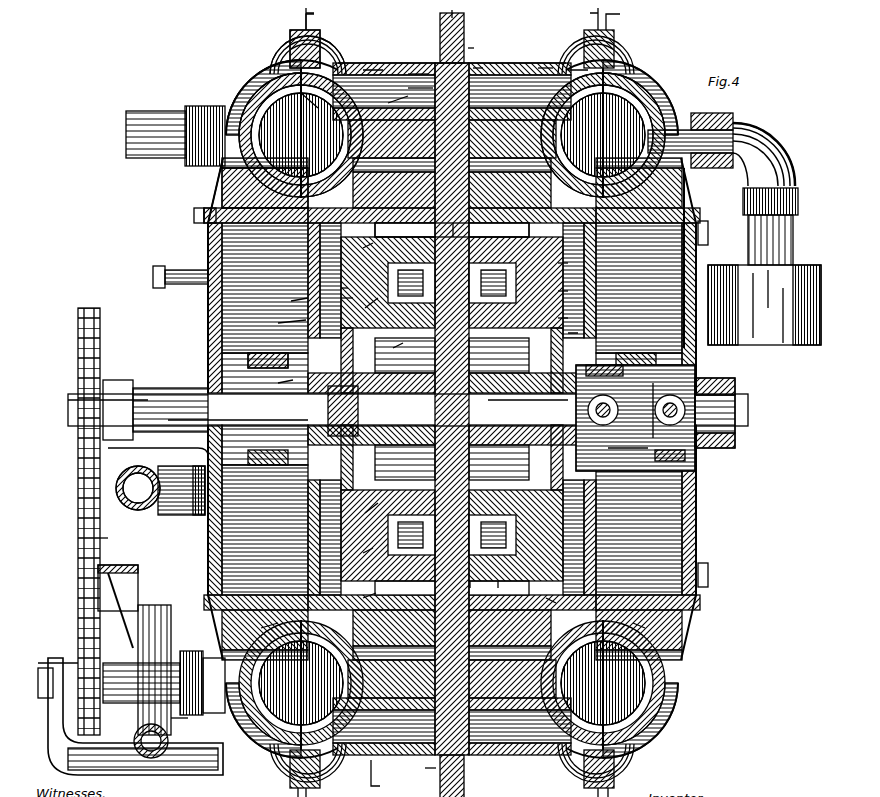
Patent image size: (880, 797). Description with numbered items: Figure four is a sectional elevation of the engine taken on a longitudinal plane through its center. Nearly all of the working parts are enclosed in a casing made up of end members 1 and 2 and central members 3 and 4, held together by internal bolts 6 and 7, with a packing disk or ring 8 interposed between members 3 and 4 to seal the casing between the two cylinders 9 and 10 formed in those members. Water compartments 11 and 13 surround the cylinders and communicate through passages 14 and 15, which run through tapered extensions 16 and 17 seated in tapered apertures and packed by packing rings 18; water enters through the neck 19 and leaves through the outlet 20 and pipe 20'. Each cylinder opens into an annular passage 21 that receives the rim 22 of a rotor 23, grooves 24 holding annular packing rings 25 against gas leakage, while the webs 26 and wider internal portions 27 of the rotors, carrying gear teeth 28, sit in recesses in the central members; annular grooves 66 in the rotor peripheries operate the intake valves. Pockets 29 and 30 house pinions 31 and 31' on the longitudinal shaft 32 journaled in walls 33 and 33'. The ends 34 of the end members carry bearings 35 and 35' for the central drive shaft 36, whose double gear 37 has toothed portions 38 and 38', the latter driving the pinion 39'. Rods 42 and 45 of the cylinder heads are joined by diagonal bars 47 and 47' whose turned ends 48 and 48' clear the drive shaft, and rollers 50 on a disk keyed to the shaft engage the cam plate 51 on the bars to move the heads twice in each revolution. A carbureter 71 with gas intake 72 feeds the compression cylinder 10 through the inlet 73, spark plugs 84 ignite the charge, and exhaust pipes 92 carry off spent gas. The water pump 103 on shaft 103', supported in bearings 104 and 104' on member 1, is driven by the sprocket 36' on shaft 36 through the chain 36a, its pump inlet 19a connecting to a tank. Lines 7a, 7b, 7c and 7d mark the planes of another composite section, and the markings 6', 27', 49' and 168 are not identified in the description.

The end member 1 is at (215, 172).
The end member 2 is at (680, 182).
The central member 3 is at (372, 58).
The central member 4 is at (535, 60).
The internal bolt 6 is at (456, 391).
The bracket arm 6' is at (181, 502).
The internal bolt 7 is at (398, 355).
The section line 7a is at (456, 13).
The section line 7b is at (314, 402).
The section line 7c is at (383, 777).
The section line 7d is at (622, 402).
The disk or ring 8 is at (462, 40).
The cylinder 9 is at (301, 409).
The cylinder 10 is at (603, 409).
The water compartment 11 is at (250, 80).
The water compartment 13 is at (370, 60).
The passage 14 is at (428, 413).
The passage 15 is at (272, 45).
The tapered extension 16 is at (430, 58).
The tapered extension 17 is at (305, 33).
The packing ring 18 is at (468, 60).
The neck 19 is at (334, 439).
The pump inlet 19a is at (88, 572).
The outlet 20 is at (200, 123).
The pipe 20' is at (155, 123).
The annular passage 21 is at (452, 373).
The rim 22 is at (452, 397).
The rotor 23 is at (405, 66).
The groove 24 is at (451, 630).
The annular packing ring 25 is at (453, 414).
The web 26 is at (415, 448).
The internal portion 27 is at (359, 603).
The valve member 27' is at (565, 603).
The gear teeth 28 is at (355, 253).
The pocket 29 is at (355, 555).
The pocket 30 is at (552, 424).
The pinion 31 is at (452, 400).
The pinion 31' is at (468, 589).
The longitudinal shaft 32 is at (463, 232).
The wall 33 is at (337, 286).
The wall 33' is at (537, 383).
The end 34 is at (200, 338).
The bearing 35 is at (155, 419).
The bearing 35' is at (729, 413).
The central shaft 36 is at (408, 410).
The sprocket 36' is at (107, 521).
The chain 36a is at (96, 535).
The double gear 37 is at (380, 411).
The toothed portion 38 is at (361, 512).
The toothed portion 38' is at (464, 410).
The pinion 39' is at (570, 266).
The rod 42 is at (628, 455).
The rod 45 is at (672, 380).
The diagonal bar 47 is at (635, 415).
The diagonal bar 47' is at (428, 412).
The end 48 is at (617, 400).
The end 48' is at (658, 410).
The bearing 49' is at (420, 361).
The roller 50 is at (287, 299).
The cam plate 51 is at (281, 323).
The annular groove 66 is at (390, 98).
The carbureter 71 is at (764, 305).
The gas intake 72 is at (765, 140).
The inlet 73 is at (700, 115).
The spark plug 84 is at (172, 258).
The exhaust pipe 92 is at (135, 502).
The pump 103 is at (157, 672).
The shaft 103' is at (190, 729).
The bearing 104 is at (164, 671).
The bearing 104' is at (130, 716).
The bottom plate 168 is at (414, 770).